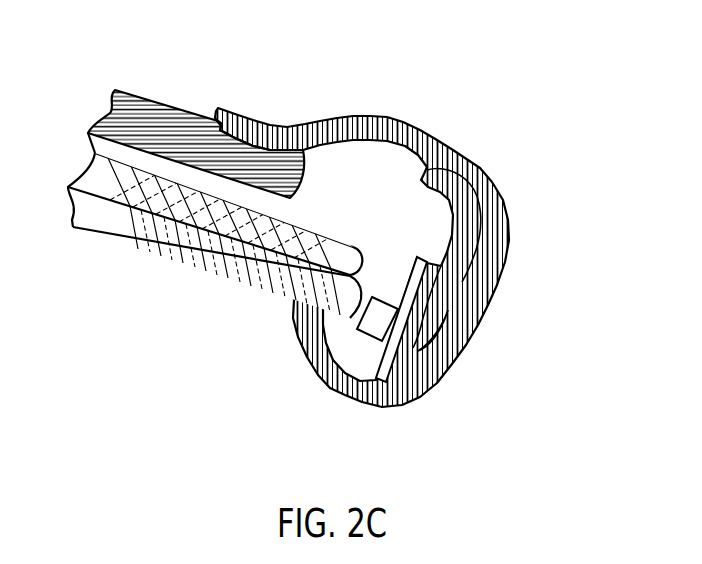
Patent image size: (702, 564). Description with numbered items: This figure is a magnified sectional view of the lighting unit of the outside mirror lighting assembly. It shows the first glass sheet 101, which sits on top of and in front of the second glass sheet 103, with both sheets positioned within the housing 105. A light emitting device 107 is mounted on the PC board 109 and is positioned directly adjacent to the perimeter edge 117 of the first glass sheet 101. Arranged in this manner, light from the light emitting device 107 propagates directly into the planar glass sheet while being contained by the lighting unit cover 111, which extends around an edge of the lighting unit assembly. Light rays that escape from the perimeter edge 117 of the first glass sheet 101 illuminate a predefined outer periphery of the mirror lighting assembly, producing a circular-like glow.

The first glass sheet 101 is at (122, 247).
The second glass sheet 103 is at (227, 243).
The housing 105 is at (146, 99).
The light emitting device 107 is at (360, 332).
The PC board 109 is at (390, 365).
The lighting unit cover 111 is at (497, 178).
The perimeter edge 117 is at (362, 292).